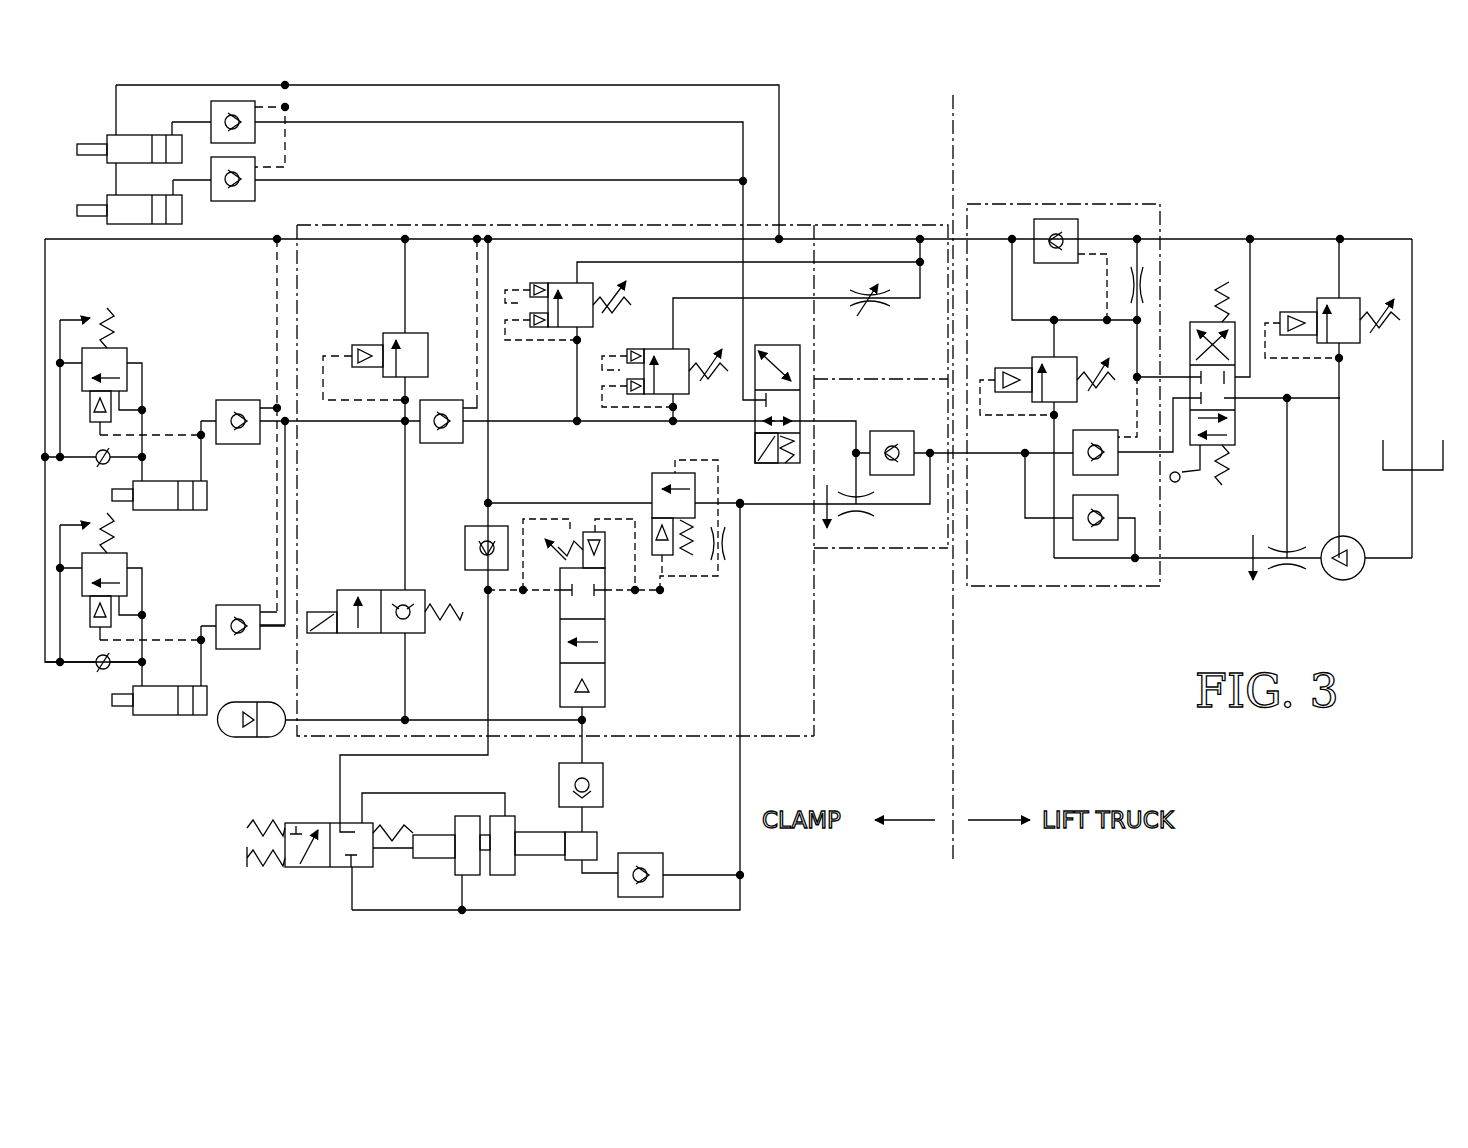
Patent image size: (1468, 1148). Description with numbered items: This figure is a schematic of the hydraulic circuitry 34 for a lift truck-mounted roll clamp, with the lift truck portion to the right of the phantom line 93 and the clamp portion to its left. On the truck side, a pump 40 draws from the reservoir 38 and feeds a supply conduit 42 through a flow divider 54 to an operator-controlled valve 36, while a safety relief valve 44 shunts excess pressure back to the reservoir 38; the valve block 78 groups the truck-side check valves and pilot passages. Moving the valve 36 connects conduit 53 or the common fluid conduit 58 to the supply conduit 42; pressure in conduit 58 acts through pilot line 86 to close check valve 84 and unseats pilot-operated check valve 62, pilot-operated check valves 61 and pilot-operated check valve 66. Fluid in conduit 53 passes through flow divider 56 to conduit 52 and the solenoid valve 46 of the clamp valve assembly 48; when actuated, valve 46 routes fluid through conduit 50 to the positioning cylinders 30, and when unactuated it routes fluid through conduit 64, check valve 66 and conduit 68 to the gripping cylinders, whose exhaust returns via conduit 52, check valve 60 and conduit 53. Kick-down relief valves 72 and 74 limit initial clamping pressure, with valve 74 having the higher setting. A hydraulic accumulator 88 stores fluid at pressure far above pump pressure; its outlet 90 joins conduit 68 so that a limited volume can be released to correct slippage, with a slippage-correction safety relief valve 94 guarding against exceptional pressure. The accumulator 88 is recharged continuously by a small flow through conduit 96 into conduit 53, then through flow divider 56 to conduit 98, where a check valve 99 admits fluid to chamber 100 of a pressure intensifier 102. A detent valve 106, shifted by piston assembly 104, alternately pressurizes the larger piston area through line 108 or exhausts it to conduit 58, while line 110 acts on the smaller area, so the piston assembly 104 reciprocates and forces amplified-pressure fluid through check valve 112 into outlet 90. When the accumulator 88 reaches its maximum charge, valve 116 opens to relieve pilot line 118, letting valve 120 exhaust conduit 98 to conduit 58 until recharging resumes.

The hydraulic cylinders 30 is at (100, 164).
The hydraulic circuitry 34 is at (909, 185).
The operator-controlled valve 36 is at (1200, 322).
The reservoir 38 is at (1400, 470).
The pump 40 is at (1350, 580).
The supply conduit 42 is at (1287, 470).
The safety relief valve 44 is at (1360, 305).
The solenoid valve 46 is at (800, 357).
The valve assembly 48 is at (814, 635).
The conduit 50 is at (743, 200).
The conduit 52 is at (827, 421).
The conduit 53 is at (990, 456).
The flow divider 54 is at (1280, 564).
The flow divider 56 is at (858, 519).
The fluid conduit 58 is at (1012, 235).
The check valve 60 is at (914, 441).
The pilot-operated check valves 61 is at (211, 113).
The pilot-operated check valve 62 is at (1118, 472).
The conduit 64 is at (535, 421).
The pilot-operated check valve 66 is at (447, 443).
The conduit 68 is at (348, 421).
The kick-down relief valve 72 is at (652, 398).
The kick-down relief valve 74 is at (560, 283).
The lift truck valve block 78 is at (1080, 586).
The pilot-operated check valve 84 is at (1056, 219).
The pilot line 86 is at (1137, 265).
The hydraulic accumulator 88 is at (248, 737).
The outlet 90 is at (356, 720).
The phantom line 93 is at (953, 697).
The slippage-correction safety relief valve 94 is at (392, 333).
The conduit 96 is at (1197, 558).
The conduit 98 is at (742, 618).
The check valve 99 is at (650, 853).
The chamber 100 is at (597, 843).
The pressure intensifier 102 is at (500, 875).
The piston assembly 104 is at (437, 858).
The detent valve 106 is at (318, 867).
The line 108 is at (480, 793).
The line 110 is at (462, 895).
The check valve 112 is at (603, 783).
The valve 116 is at (605, 650).
The pilot line 118 is at (645, 594).
The valve 120 is at (652, 483).